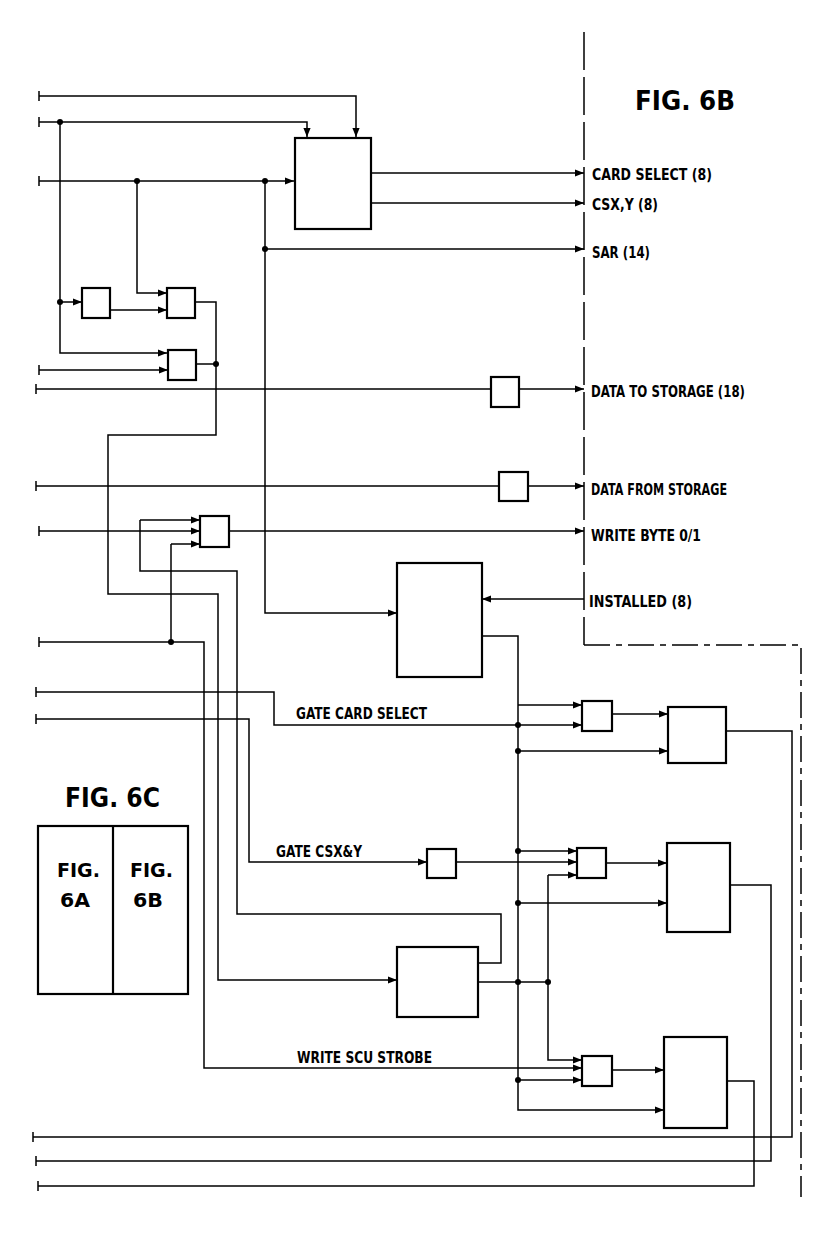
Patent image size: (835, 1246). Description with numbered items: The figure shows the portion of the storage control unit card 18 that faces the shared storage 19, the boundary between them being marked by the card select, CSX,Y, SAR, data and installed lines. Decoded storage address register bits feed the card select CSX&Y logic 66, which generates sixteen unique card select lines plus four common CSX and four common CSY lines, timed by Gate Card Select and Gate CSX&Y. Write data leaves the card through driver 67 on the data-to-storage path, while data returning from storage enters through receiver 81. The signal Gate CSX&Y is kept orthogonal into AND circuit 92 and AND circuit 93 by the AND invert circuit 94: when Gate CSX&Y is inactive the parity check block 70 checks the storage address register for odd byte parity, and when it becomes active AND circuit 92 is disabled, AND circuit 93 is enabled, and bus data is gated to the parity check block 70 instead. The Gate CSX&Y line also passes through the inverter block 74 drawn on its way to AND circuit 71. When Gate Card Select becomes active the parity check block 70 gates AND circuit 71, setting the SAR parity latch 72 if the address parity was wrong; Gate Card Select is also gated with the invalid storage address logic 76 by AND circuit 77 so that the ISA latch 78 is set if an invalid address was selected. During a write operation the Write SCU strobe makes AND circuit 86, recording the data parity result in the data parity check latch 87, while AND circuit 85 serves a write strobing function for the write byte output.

The storage control unit card 18 is at (584, 41).
The shared storage 19 is at (797, 36).
The card select CSX&Y logic 66 is at (372, 146).
The driver 67 is at (503, 377).
The parity check block 70 is at (396, 957).
The AND circuit 71 is at (592, 848).
The SAR parity latch 72 is at (696, 843).
The inverter 74 is at (443, 849).
The invalid storage address logic 76 is at (396, 575).
The AND circuit 77 is at (594, 701).
The ISA latch 78 is at (696, 707).
The receiver 81 is at (505, 472).
The AND circuit 85 is at (216, 516).
The AND circuit 86 is at (592, 1056).
The data parity check latch 87 is at (700, 1037).
The AND circuit 92 is at (180, 288).
The AND circuit 93 is at (175, 350).
The AND invert circuit 94 is at (88, 288).